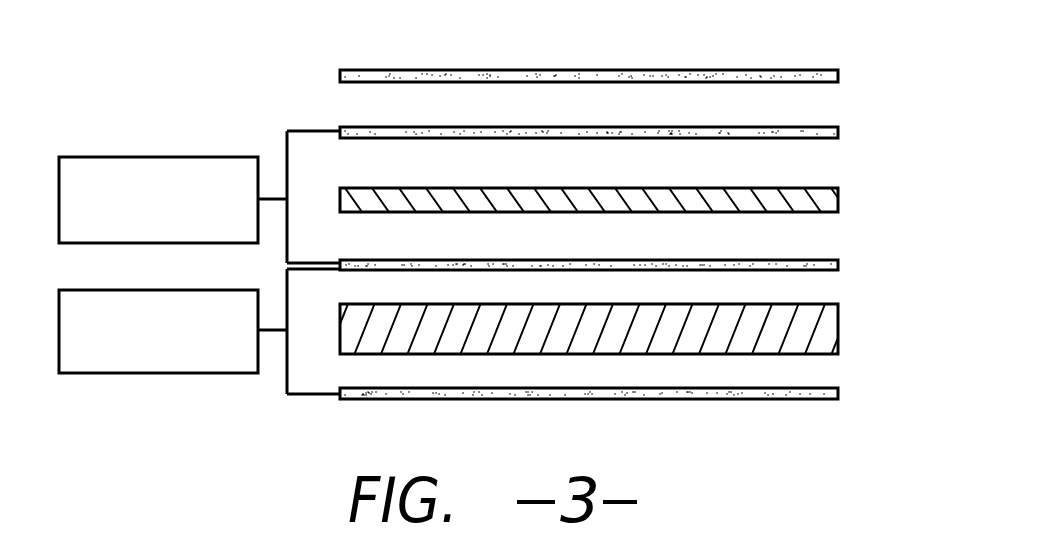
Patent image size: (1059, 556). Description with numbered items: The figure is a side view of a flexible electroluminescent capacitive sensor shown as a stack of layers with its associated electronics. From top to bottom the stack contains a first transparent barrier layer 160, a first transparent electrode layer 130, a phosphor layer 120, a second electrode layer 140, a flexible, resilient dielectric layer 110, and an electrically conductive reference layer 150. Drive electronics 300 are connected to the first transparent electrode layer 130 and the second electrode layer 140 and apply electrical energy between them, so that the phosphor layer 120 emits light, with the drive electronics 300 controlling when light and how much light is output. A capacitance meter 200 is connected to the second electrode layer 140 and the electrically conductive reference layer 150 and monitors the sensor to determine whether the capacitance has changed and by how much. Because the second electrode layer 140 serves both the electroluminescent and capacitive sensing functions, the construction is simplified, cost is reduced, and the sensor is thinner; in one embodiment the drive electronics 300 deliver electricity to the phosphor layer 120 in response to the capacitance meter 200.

The flexible, resilient dielectric layer 110 is at (838, 305).
The phosphor layer 120 is at (838, 189).
The first transparent electrode layer 130 is at (838, 128).
The second electrode layer 140 is at (838, 261).
The electrically conductive reference layer 150 is at (838, 389).
The first transparent barrier layer 160 is at (838, 71).
The capacitance meter 200 is at (175, 374).
The drive electronics 300 is at (167, 157).